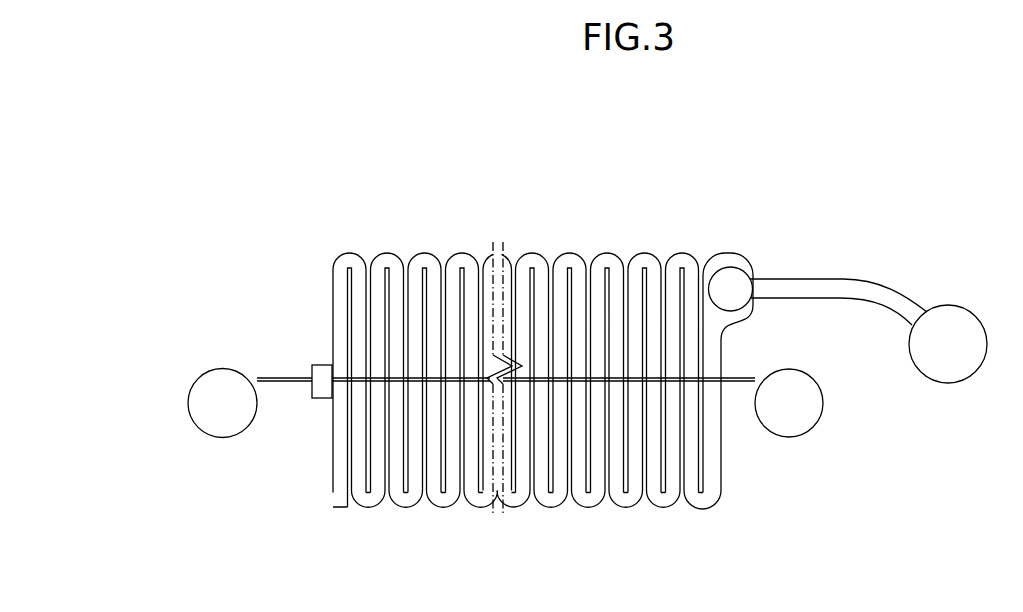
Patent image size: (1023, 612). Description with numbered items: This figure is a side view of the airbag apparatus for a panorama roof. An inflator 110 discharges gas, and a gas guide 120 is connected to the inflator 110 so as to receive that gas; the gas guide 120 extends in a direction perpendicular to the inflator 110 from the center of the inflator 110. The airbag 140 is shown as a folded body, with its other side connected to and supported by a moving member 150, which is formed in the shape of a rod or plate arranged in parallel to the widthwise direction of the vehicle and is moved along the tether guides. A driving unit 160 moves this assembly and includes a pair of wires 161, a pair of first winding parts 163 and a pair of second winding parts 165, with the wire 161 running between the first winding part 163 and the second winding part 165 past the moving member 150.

The inflator 110 is at (960, 322).
The gas guide 120 is at (815, 290).
The airbag 140 is at (656, 243).
The moving member 150 is at (325, 370).
The driving unit 160 is at (547, 437).
The wires 161 is at (347, 380).
The first winding parts 163 is at (793, 417).
The second winding parts 165 is at (217, 427).